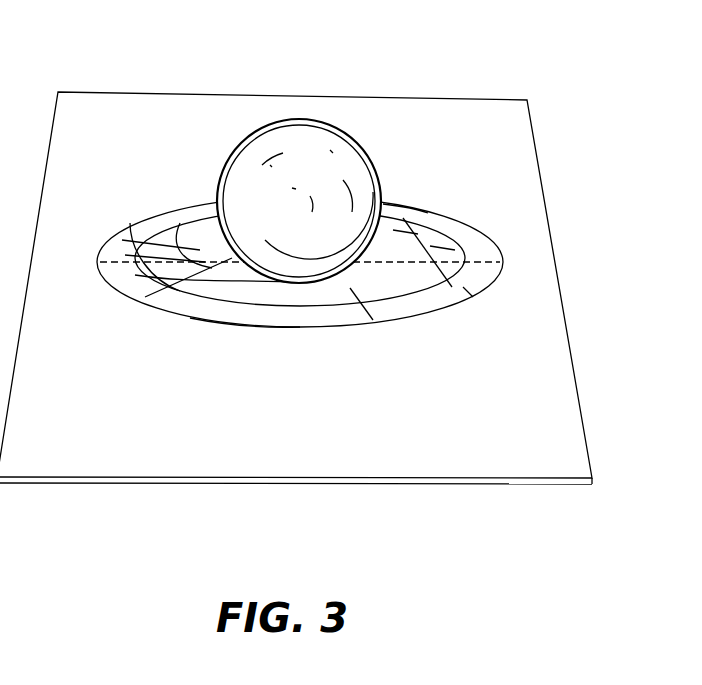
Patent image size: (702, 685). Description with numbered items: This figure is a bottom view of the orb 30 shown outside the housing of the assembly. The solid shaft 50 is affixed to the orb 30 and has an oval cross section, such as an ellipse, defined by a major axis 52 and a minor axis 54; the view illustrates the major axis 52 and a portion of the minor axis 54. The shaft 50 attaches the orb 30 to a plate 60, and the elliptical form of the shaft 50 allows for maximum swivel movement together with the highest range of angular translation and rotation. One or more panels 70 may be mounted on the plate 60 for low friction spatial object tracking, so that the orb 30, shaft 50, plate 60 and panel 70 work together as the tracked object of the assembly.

The orb 30 is at (297, 128).
The solid shaft 50 is at (291, 310).
The major axis 52 is at (108, 245).
The minor axis 54 is at (297, 313).
The plate 60 is at (556, 371).
The panel 70 is at (73, 484).